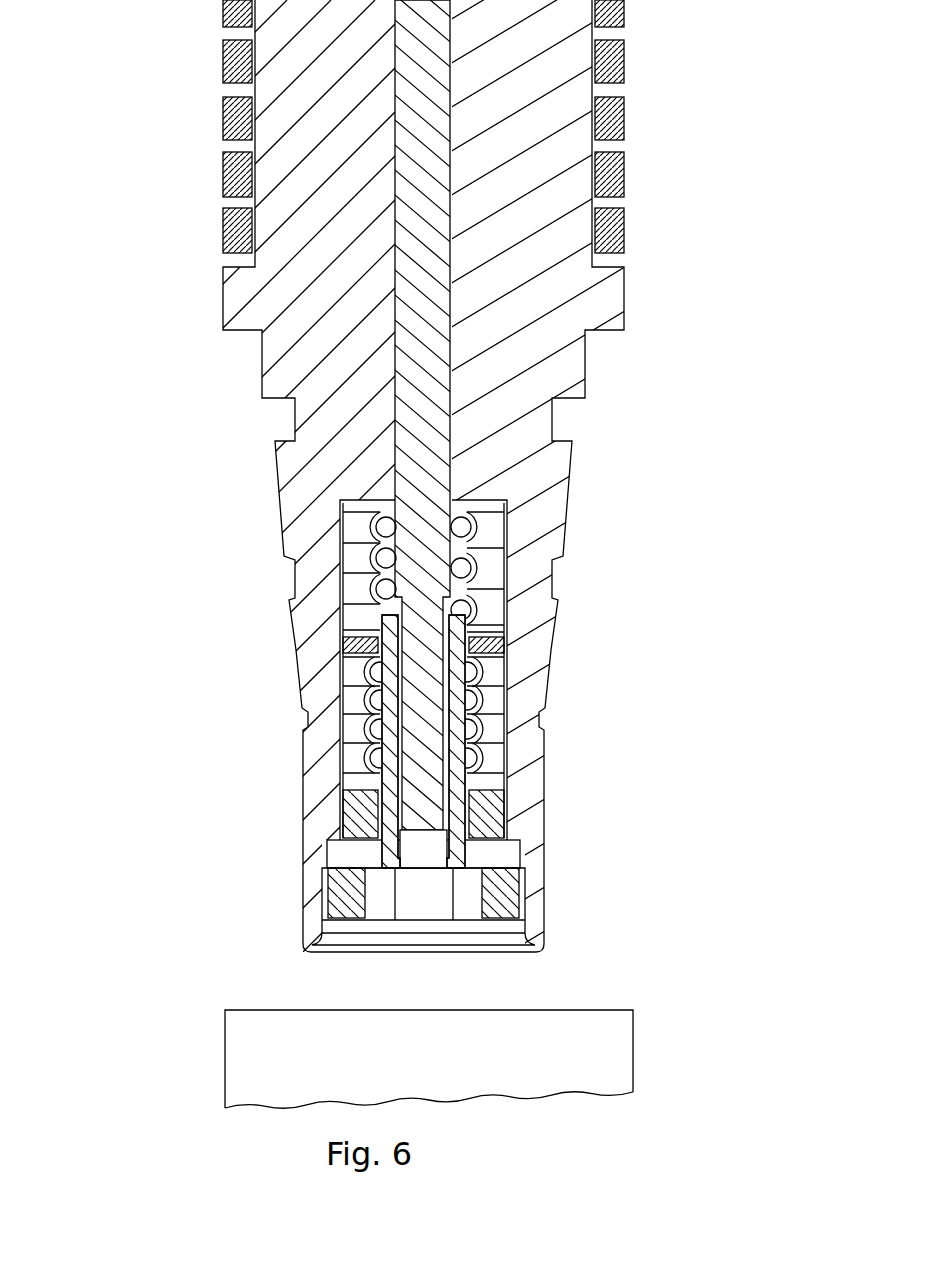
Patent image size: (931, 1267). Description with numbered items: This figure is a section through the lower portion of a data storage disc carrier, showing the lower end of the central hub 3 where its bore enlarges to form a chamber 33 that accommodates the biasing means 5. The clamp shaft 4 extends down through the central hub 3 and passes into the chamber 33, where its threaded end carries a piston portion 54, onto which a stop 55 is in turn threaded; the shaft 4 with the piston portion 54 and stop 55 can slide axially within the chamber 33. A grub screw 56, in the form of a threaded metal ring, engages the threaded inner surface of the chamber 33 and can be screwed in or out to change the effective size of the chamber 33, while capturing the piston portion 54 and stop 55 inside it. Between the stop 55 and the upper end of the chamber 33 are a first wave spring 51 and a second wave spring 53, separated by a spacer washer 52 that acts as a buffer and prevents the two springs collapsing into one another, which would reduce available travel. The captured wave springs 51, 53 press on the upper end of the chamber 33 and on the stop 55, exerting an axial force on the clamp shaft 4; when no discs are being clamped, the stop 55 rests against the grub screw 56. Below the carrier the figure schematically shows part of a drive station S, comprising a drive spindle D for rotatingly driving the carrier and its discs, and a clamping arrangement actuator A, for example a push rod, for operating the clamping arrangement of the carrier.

The central hub 3 is at (560, 382).
The clamp shaft 4 is at (437, 325).
The chamber 33 is at (500, 512).
The biasing means 5 is at (505, 757).
The first wave spring 51 is at (340, 580).
The spacer washer 52 is at (340, 650).
The second wave spring 53 is at (340, 732).
The piston portion 54 is at (340, 792).
The stop 55 is at (505, 812).
The grub screw 56 is at (505, 897).
The drive station S is at (212, 1015).
The drive spindle D is at (242, 1052).
The clamping arrangement actuator A is at (595, 1068).